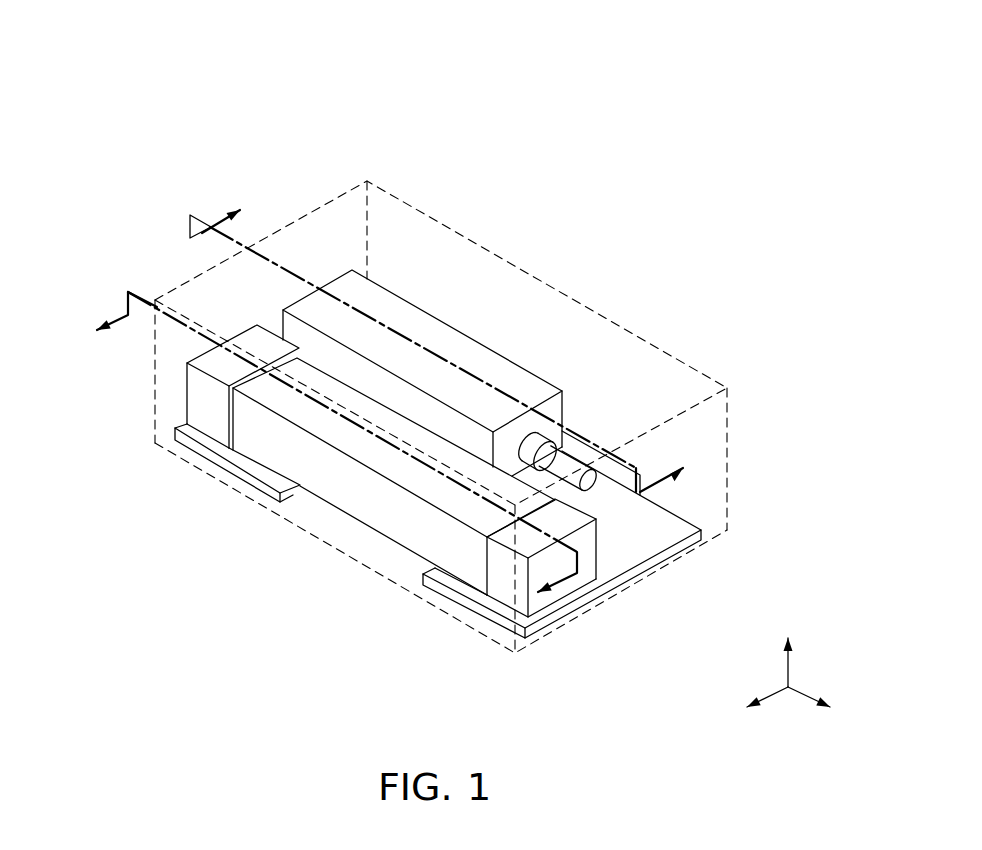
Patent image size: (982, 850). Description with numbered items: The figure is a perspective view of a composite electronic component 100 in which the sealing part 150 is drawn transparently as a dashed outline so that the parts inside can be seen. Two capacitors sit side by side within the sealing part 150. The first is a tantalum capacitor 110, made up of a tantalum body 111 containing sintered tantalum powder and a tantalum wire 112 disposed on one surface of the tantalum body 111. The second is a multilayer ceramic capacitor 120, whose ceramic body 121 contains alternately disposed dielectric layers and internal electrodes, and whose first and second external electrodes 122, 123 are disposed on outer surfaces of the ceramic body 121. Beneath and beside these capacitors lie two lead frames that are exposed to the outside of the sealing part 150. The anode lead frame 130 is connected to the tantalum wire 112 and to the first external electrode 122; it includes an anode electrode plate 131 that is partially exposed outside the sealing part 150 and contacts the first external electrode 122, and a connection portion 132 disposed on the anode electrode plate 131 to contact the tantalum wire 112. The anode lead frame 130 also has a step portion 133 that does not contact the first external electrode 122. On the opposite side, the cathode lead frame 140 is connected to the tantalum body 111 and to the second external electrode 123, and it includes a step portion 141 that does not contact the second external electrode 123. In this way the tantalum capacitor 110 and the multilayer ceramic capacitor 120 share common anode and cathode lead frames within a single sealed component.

The composite electronic component 100 is at (628, 29).
The tantalum capacitor 110 is at (501, 340).
The tantalum body 111 is at (428, 330).
The tantalum wire 112 is at (567, 458).
The multilayer ceramic capacitor 120 is at (342, 516).
The ceramic body 121 is at (425, 533).
The first external electrode 122 is at (558, 592).
The second external electrode 123 is at (202, 398).
The anode lead frame 130 is at (591, 539).
The anode electrode plate 131 is at (650, 513).
The connection portion 132 is at (633, 453).
The step portion 133 is at (450, 580).
The cathode lead frame 140 is at (216, 504).
The step portion 141 is at (277, 478).
The sealing part 150 is at (410, 205).